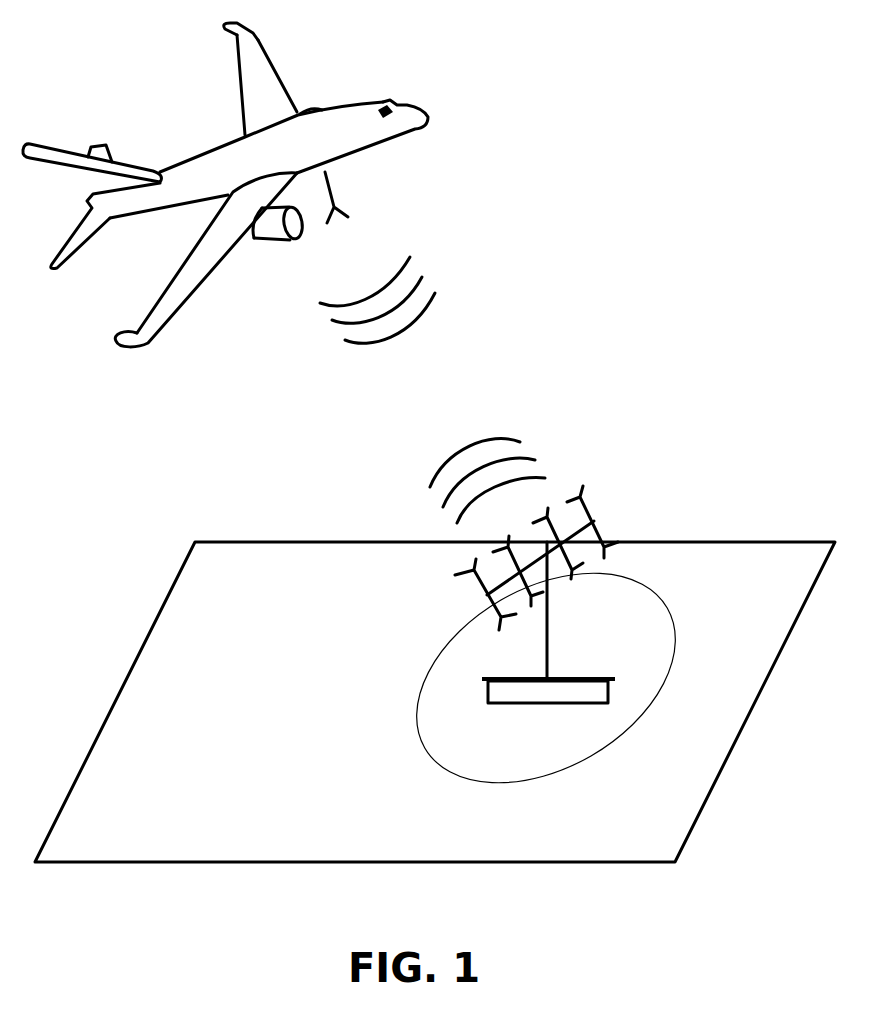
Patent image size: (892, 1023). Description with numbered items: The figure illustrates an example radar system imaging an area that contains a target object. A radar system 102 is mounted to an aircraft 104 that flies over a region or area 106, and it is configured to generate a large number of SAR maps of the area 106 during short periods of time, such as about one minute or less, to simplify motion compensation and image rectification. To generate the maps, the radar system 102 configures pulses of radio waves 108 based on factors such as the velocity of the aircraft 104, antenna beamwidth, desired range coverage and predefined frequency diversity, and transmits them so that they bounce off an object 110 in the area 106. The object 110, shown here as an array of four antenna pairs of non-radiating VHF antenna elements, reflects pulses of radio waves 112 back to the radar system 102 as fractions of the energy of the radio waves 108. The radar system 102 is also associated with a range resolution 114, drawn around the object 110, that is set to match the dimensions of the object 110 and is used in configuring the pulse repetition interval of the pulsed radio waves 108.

The radar system 102 is at (330, 180).
The aircraft 104 is at (270, 93).
The area 106 is at (228, 542).
The pulses of radio waves 108 is at (415, 310).
The object 110 is at (608, 697).
The reflected pulses of radio waves 112 is at (503, 447).
The range resolution 114 is at (605, 743).